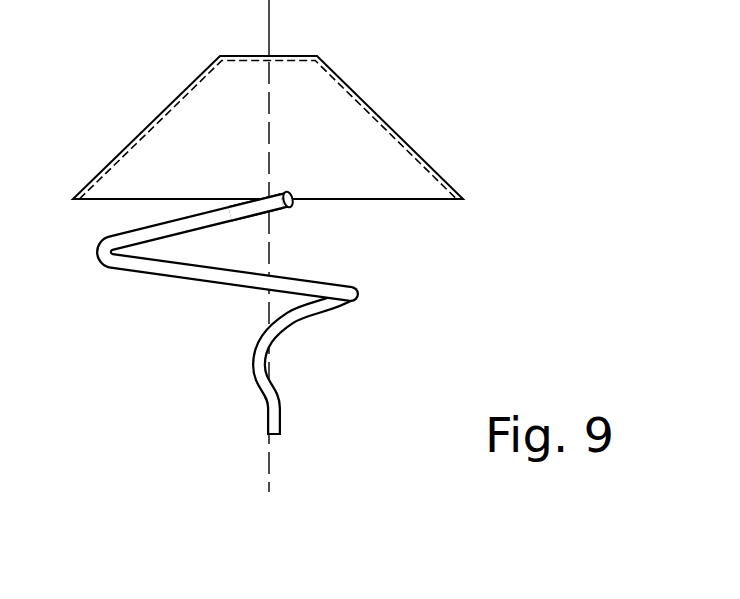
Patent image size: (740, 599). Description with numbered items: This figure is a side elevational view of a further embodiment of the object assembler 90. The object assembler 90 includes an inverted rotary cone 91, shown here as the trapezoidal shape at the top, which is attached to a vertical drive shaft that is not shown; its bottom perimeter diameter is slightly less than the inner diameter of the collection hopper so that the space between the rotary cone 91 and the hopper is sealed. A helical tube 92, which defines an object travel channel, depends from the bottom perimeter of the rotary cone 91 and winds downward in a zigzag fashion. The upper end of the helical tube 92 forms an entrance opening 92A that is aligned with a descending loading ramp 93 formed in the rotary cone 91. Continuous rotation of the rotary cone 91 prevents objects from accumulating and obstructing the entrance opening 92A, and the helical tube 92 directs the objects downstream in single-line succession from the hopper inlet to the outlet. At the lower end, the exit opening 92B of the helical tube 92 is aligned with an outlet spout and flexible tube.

The object assembler 90 is at (552, 131).
The inverted rotary cone 91 is at (202, 127).
The helical tube 92 is at (283, 361).
The entrance opening 92A is at (303, 207).
The exit opening 92B is at (270, 434).
The descending loading ramp 93 is at (323, 203).